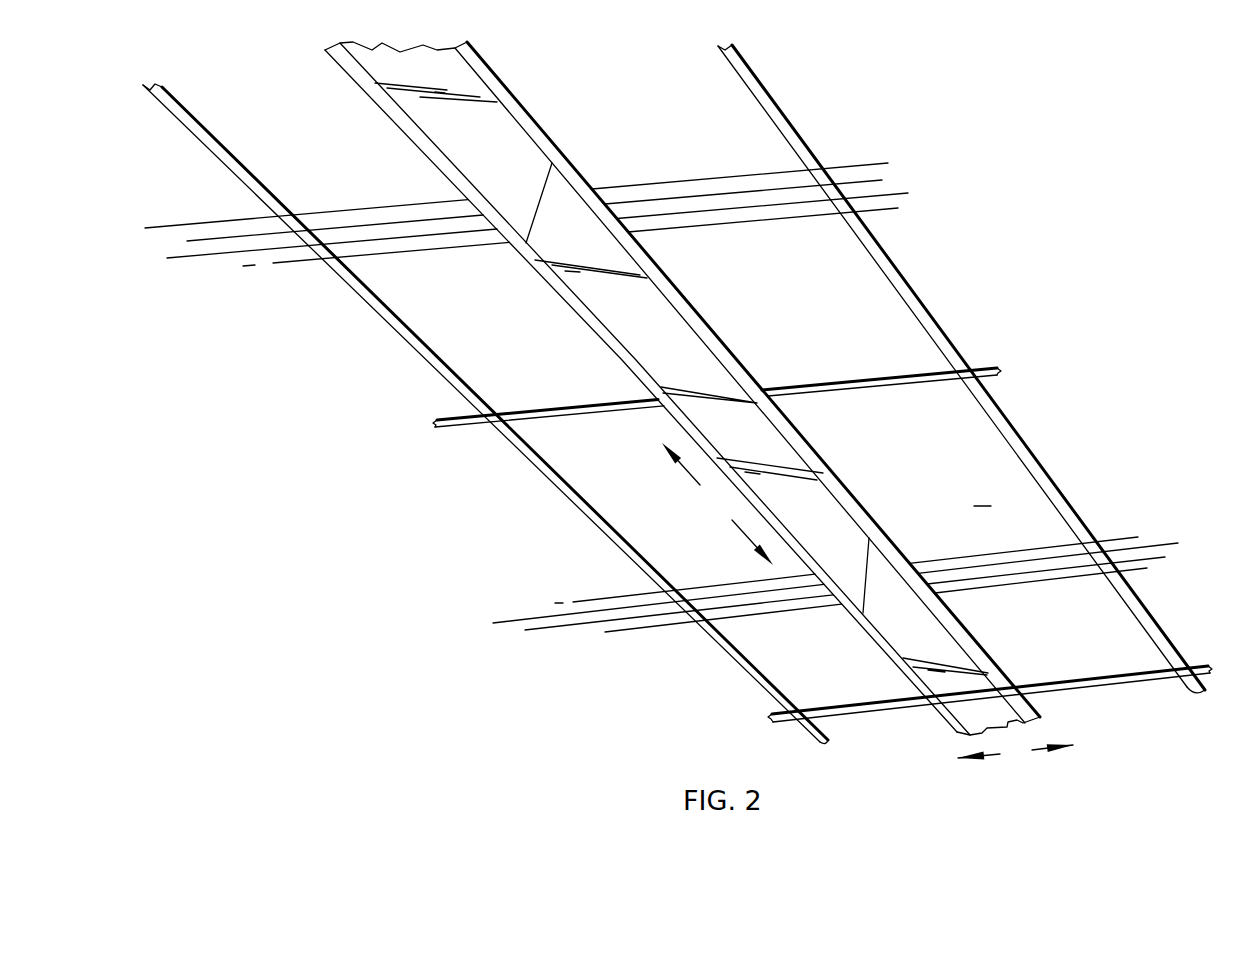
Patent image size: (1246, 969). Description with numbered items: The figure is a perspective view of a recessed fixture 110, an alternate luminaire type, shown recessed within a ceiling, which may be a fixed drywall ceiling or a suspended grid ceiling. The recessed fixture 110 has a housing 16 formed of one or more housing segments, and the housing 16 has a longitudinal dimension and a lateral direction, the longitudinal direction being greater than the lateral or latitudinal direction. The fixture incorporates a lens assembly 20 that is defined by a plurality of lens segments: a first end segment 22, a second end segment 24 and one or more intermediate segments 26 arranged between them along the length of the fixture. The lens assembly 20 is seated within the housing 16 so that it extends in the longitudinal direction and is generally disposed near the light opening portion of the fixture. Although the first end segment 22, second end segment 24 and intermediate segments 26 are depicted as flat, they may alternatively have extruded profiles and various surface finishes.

The recessed fixture 110 is at (1010, 236).
The housing 16 is at (730, 329).
The lens assembly 20 is at (556, 267).
The first end segment 22 is at (442, 130).
The second end segment 24 is at (945, 652).
The intermediate segment 26 is at (640, 345).